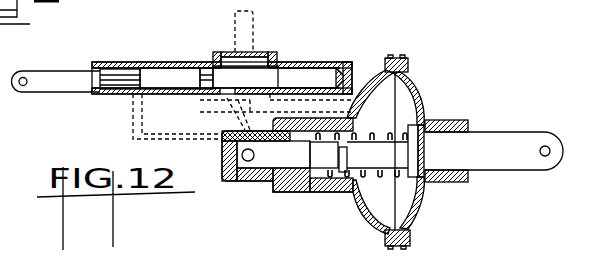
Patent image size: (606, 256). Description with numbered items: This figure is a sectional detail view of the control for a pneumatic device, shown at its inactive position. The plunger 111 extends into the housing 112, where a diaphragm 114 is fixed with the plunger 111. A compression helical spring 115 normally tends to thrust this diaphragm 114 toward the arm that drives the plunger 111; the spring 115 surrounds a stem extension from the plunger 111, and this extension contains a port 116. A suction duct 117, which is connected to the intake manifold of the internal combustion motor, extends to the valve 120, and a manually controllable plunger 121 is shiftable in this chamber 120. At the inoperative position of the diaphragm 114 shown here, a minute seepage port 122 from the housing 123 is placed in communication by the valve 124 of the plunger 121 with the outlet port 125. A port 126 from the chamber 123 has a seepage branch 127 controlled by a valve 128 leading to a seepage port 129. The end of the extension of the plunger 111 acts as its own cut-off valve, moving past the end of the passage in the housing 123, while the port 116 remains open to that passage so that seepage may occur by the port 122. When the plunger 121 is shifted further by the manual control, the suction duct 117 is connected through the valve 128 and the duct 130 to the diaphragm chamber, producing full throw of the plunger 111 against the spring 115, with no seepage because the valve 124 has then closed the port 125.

The plunger 111 is at (520, 124).
The housing 112 is at (467, 108).
The diaphragm 114 is at (412, 78).
The compression helical spring 115 is at (373, 176).
The port 116 is at (342, 152).
The suction duct 117 is at (255, 26).
The valve 120 is at (352, 62).
The manually controllable plunger 121 is at (70, 70).
The minute seepage port 122 is at (287, 155).
The housing 123 is at (272, 186).
The valve 124 is at (117, 83).
The outlet port 125 is at (136, 63).
The port 126 is at (224, 148).
The seepage branch 127 is at (202, 112).
The valve 128 is at (193, 69).
The seepage port 129 is at (204, 62).
The duct 130 is at (352, 106).